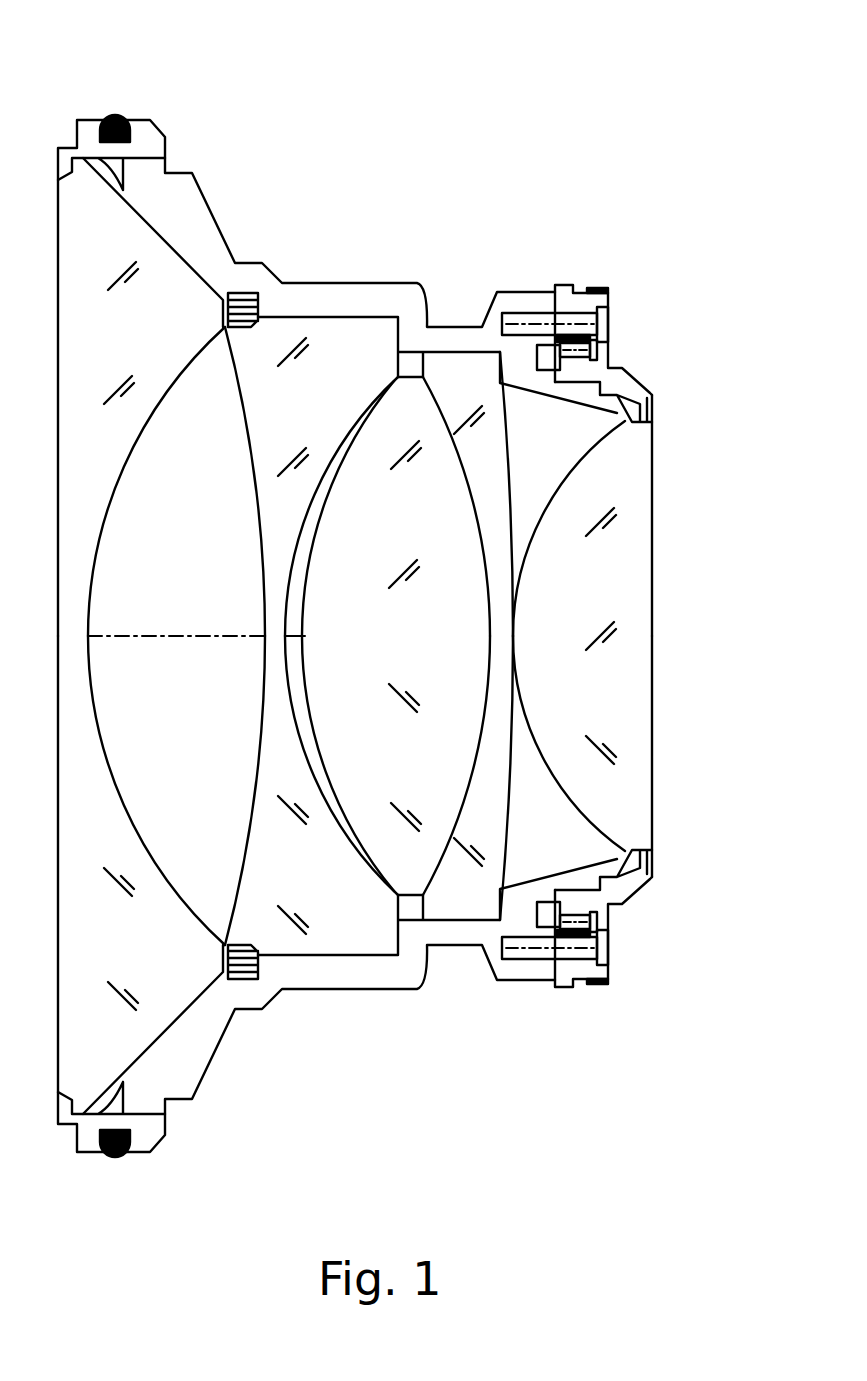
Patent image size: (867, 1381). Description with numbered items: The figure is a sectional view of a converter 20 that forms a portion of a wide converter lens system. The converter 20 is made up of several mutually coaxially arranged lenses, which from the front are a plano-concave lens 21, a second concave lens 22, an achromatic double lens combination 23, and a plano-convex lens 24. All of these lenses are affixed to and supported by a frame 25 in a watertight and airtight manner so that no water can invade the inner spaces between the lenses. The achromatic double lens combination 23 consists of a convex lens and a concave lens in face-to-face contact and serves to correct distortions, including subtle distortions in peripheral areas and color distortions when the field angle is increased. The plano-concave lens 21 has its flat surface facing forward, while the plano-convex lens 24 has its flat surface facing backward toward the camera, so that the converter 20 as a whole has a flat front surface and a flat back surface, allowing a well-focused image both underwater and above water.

The converter 20 is at (446, 54).
The plano-concave lens 21 is at (178, 310).
The second concave lens 22 is at (335, 370).
The achromatic double lens combination 23 is at (460, 385).
The plano-convex lens 24 is at (627, 463).
The frame 25 is at (340, 973).